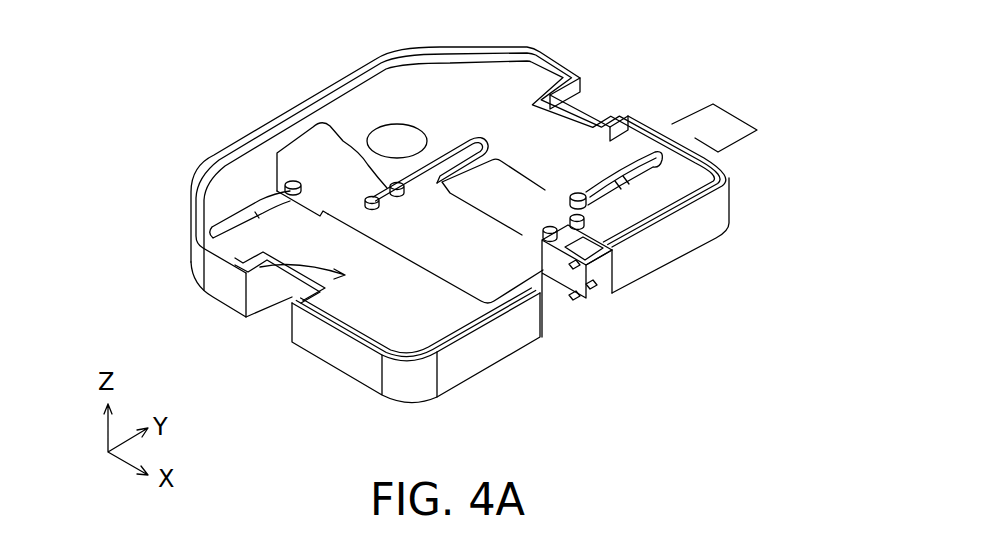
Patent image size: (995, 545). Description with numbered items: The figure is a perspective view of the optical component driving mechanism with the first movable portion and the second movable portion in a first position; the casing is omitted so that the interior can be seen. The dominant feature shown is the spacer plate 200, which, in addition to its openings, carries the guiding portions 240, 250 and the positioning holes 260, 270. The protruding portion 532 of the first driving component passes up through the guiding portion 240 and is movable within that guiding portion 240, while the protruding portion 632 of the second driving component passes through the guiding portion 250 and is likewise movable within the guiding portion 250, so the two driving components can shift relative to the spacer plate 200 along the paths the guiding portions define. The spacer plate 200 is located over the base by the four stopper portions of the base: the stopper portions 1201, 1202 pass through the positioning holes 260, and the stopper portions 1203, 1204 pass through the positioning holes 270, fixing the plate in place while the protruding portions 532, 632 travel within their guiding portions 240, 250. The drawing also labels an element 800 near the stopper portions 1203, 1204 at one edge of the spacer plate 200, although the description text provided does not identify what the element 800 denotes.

The spacer plate 200 is at (247, 278).
The guiding portion 240 is at (246, 204).
The guiding portion 250 is at (642, 172).
The positioning hole 260 is at (363, 140).
The positioning hole 270 is at (618, 246).
The protruding portion 532 is at (297, 178).
The protruding portion 632 is at (578, 190).
The connector block 800 is at (594, 262).
The stopper portion 1201 is at (369, 196).
The stopper portion 1202 is at (396, 182).
The stopper portion 1203 is at (622, 240).
The stopper portion 1204 is at (550, 270).